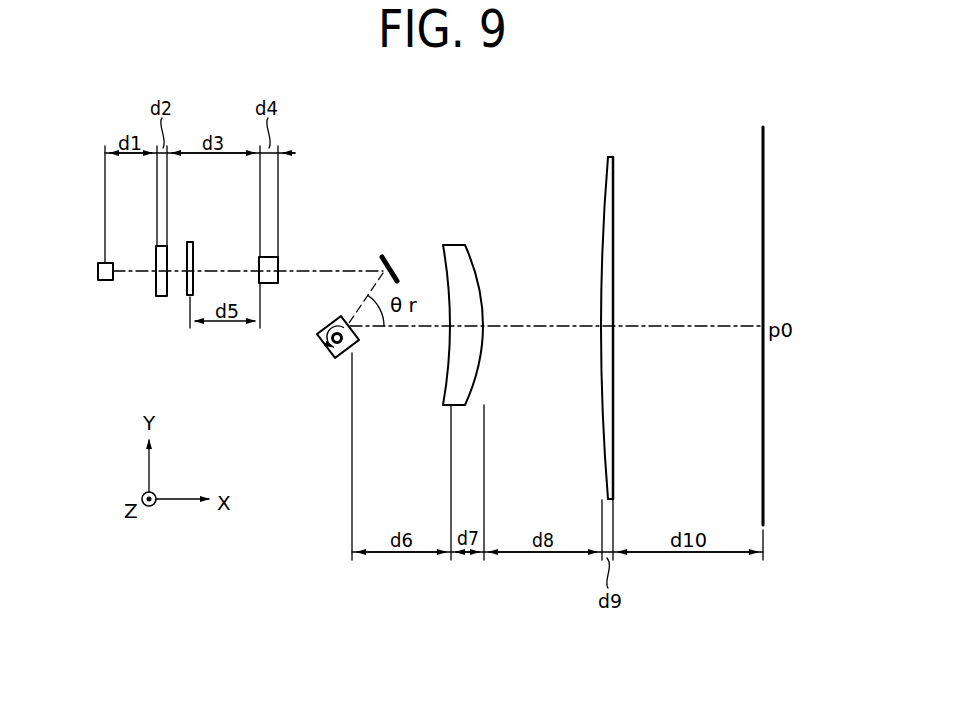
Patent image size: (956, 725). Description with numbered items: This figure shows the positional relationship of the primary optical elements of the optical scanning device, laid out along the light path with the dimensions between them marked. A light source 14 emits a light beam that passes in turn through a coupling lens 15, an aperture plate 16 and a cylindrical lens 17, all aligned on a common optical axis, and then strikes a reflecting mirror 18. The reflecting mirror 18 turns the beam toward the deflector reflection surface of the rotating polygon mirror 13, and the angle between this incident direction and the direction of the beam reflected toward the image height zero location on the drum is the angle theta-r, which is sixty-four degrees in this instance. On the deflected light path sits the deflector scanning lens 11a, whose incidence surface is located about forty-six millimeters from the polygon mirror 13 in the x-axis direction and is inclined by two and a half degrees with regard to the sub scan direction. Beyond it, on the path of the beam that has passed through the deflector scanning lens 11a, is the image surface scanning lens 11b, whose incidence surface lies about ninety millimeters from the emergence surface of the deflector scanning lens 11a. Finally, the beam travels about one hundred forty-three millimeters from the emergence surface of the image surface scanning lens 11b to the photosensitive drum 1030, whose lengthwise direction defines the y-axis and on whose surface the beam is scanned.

The polygon mirror 13 is at (323, 352).
The light source 14 is at (98, 268).
The coupling lens 15 is at (156, 288).
The aperture plate 16 is at (191, 242).
The cylindrical lens 17 is at (278, 265).
The reflecting mirror 18 is at (393, 255).
The deflector scanning lens 11a is at (472, 262).
The image surface scanning lens 11b is at (613, 222).
The photosensitive drum 1030 is at (763, 148).